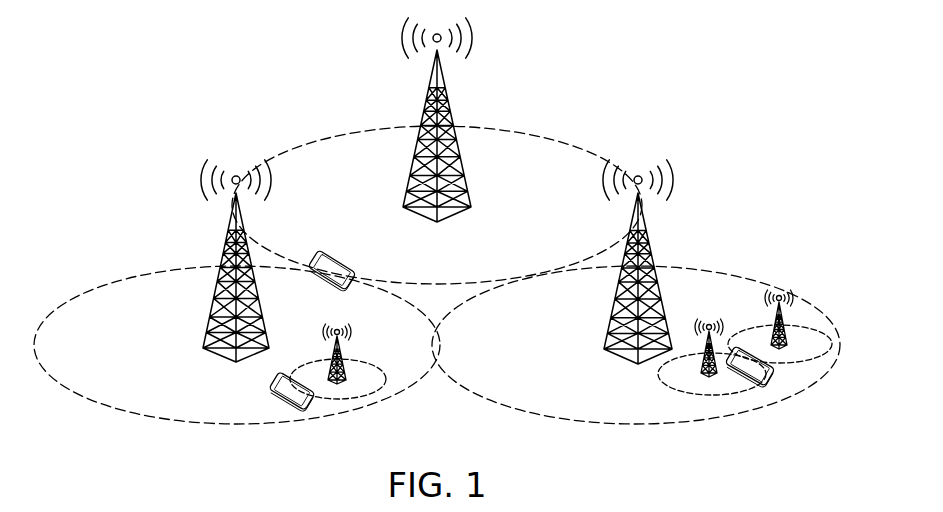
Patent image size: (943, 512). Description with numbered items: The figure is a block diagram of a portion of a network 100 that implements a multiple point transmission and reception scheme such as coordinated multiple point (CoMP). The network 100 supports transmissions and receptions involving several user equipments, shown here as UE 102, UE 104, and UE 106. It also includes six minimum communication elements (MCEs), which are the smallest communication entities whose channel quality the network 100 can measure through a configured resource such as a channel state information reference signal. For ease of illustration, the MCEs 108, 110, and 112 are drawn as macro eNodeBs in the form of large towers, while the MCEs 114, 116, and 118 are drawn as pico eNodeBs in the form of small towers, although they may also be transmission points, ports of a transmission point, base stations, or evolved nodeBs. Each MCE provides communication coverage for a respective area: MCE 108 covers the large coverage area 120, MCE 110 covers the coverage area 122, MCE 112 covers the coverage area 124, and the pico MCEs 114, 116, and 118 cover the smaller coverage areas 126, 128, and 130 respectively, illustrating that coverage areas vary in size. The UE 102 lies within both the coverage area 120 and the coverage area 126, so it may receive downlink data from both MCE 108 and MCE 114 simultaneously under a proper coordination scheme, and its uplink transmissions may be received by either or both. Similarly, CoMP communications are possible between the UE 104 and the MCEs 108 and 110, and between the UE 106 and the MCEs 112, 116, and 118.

The network 100 is at (264, 75).
The user equipment 102 is at (271, 396).
The user equipment 104 is at (348, 258).
The user equipment 106 is at (766, 383).
The minimum communication element 108 is at (228, 256).
The minimum communication element 110 is at (425, 108).
The minimum communication element 112 is at (613, 312).
The minimum communication element 114 is at (343, 353).
The minimum communication element 116 is at (720, 375).
The minimum communication element 118 is at (773, 322).
The coverage area 120 is at (103, 359).
The coverage area 122 is at (557, 219).
The coverage area 124 is at (542, 359).
The coverage area 126 is at (387, 377).
The coverage area 128 is at (660, 378).
The coverage area 130 is at (805, 325).